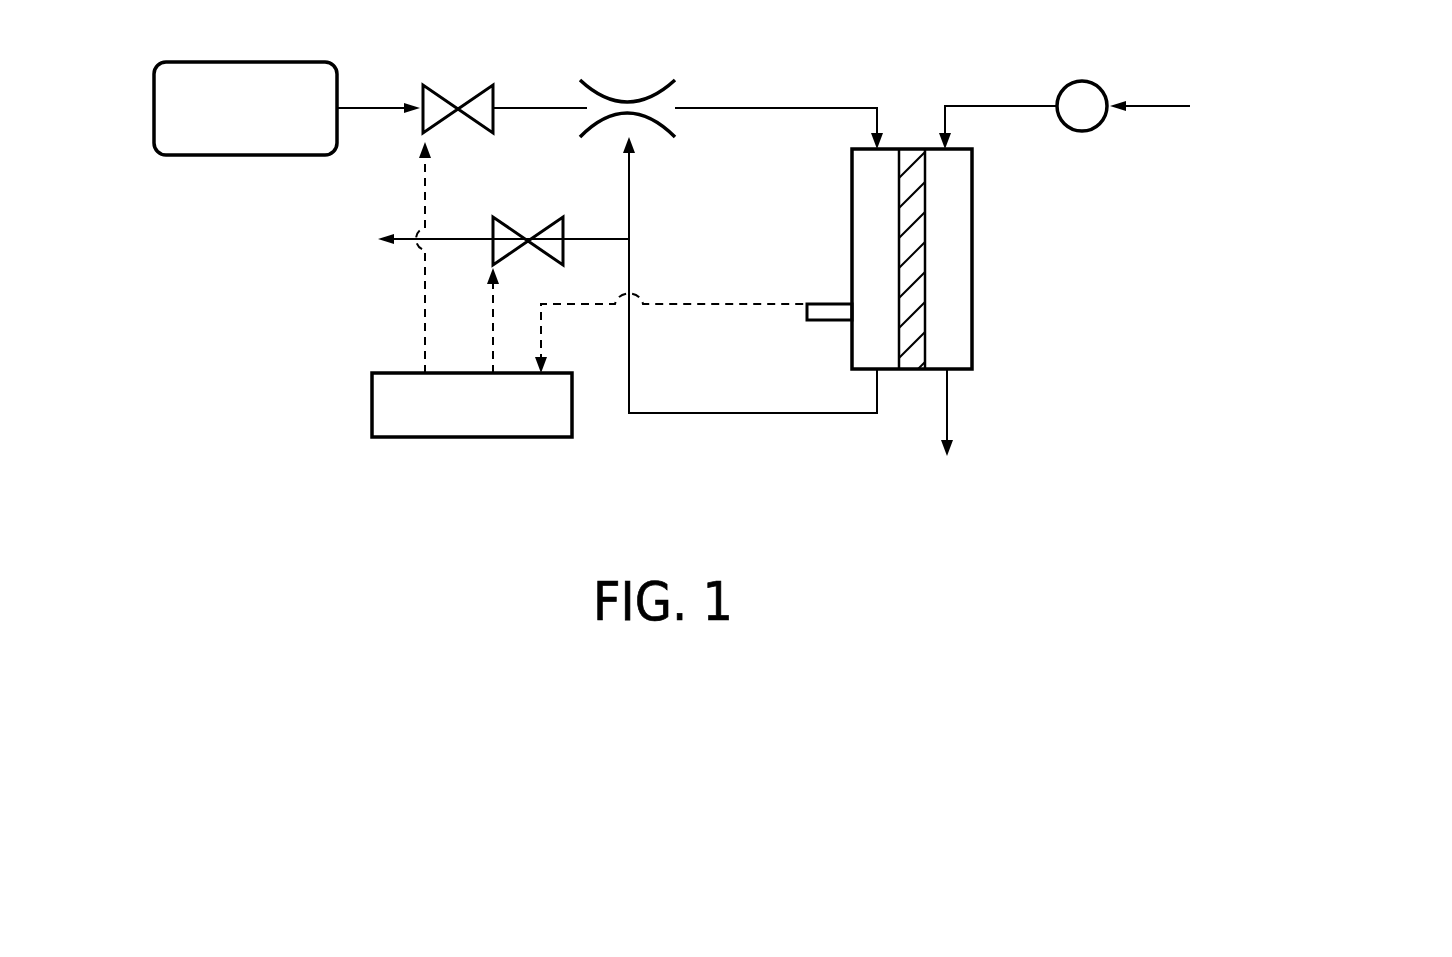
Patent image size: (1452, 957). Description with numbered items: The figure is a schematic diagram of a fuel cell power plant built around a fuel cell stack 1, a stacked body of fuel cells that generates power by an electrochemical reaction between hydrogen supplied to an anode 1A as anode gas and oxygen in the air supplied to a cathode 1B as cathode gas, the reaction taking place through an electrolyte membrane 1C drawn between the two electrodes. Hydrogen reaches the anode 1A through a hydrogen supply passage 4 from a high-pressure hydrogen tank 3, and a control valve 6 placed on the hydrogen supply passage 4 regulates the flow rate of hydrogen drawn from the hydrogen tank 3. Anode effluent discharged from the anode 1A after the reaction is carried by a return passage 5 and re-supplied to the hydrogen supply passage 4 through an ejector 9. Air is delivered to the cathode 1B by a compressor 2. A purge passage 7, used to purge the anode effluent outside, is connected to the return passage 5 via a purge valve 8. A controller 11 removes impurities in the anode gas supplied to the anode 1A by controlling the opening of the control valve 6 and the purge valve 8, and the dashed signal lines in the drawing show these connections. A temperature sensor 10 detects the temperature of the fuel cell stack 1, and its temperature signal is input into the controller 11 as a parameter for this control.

The fuel cell stack 1 is at (972, 233).
The anode 1A is at (898, 338).
The cathode 1B is at (925, 332).
The electrolyte membrane 1C is at (910, 288).
The compressor 2 is at (1085, 131).
The hydrogen tank 3 is at (260, 62).
The hydrogen supply passage 4 is at (770, 108).
The return passage 5 is at (629, 183).
The control valve 6 is at (433, 86).
The purge passage 7 is at (460, 239).
The purge valve 8 is at (520, 217).
The ejector 9 is at (608, 98).
The temperature sensor 10 is at (828, 304).
The controller 11 is at (485, 437).